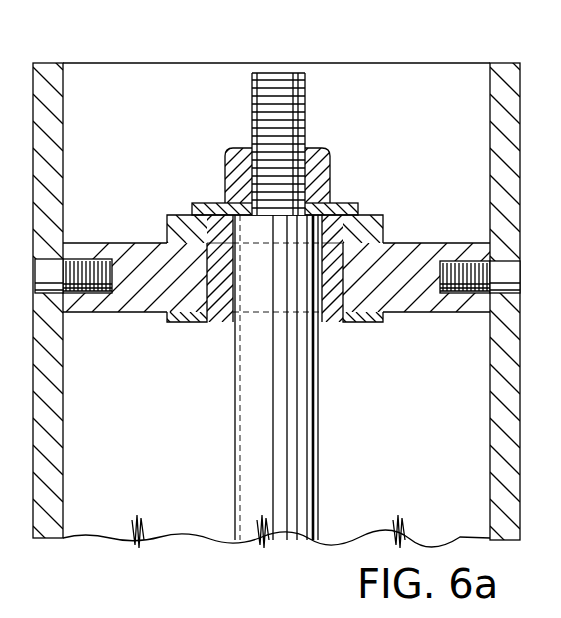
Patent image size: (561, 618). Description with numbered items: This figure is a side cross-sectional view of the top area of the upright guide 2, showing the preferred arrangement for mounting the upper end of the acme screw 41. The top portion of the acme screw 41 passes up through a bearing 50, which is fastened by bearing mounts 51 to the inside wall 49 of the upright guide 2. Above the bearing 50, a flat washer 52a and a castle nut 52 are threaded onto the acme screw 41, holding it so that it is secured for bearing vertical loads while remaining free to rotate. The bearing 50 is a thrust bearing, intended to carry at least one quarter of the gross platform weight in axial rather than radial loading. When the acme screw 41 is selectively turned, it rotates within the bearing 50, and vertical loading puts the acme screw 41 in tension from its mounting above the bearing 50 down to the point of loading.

The upright guide 2 is at (62, 63).
The inside wall 49 is at (63, 155).
The bearing 50 is at (141, 303).
The bearing mounts 51 is at (88, 259).
The castle nut 52 is at (225, 150).
The flat washer 52a is at (205, 203).
The acme screw 41 is at (323, 455).